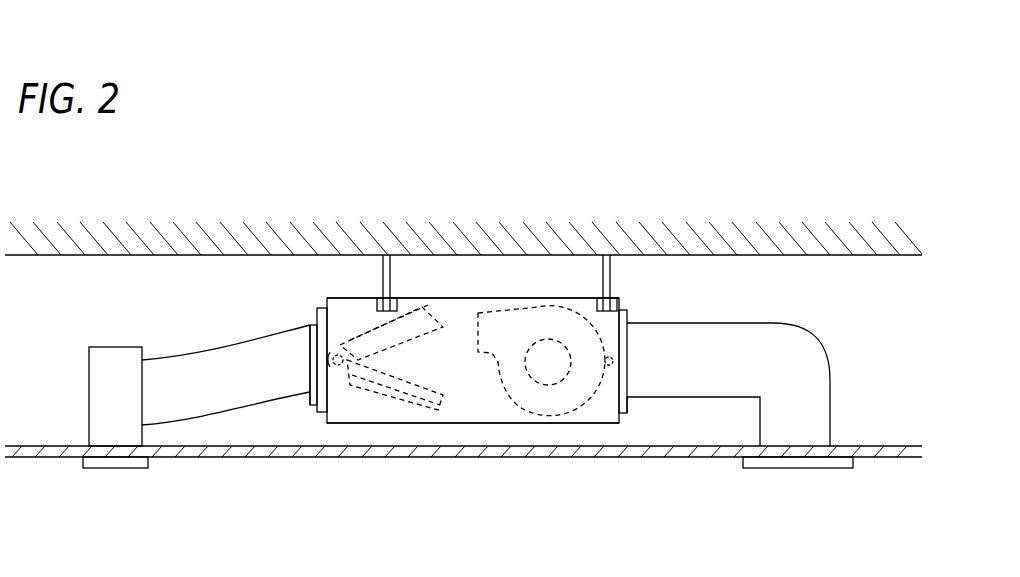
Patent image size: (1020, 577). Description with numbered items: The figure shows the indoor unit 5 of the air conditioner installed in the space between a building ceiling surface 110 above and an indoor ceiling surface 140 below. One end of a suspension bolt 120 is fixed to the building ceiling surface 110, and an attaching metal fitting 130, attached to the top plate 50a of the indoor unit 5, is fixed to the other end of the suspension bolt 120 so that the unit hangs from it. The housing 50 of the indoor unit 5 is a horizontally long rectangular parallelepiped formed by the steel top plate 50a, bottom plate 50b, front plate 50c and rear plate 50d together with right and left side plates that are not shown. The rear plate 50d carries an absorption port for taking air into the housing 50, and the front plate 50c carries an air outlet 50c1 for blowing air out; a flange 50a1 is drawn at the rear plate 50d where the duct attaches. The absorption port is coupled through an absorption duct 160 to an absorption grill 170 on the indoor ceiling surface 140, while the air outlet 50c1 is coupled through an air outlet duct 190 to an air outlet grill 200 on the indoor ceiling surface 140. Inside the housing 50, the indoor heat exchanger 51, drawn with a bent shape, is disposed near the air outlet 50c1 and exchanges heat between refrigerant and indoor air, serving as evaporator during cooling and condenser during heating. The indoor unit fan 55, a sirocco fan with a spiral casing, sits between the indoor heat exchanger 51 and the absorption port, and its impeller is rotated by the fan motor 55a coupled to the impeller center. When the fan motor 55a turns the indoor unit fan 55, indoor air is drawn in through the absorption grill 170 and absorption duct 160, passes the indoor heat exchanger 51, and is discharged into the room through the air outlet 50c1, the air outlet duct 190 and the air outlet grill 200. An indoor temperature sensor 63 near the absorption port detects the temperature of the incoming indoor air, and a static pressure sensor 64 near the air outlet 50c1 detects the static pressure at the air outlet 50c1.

The indoor unit 5 is at (448, 273).
The housing 50 is at (473, 347).
The top plate 50a is at (558, 297).
The outlet flange 50a1 is at (630, 407).
The bottom plate 50b is at (473, 423).
The front plate 50c is at (310, 357).
The air outlet 50c1 is at (310, 400).
The rear plate 50d is at (627, 358).
The indoor heat exchanger 51 is at (407, 405).
The indoor unit fan 55 is at (530, 413).
The fan motor 55a is at (528, 373).
The indoor temperature sensor 63 is at (609, 365).
The static pressure sensor 64 is at (336, 367).
The building ceiling surface 110 is at (885, 256).
The suspension bolt 120 is at (383, 275).
The attaching metal fitting 130 is at (377, 304).
The indoor ceiling surface 140 is at (867, 459).
The absorption duct 160 is at (737, 357).
The absorption grill 170 is at (795, 469).
The air outlet duct 190 is at (212, 367).
The air outlet grill 200 is at (113, 469).